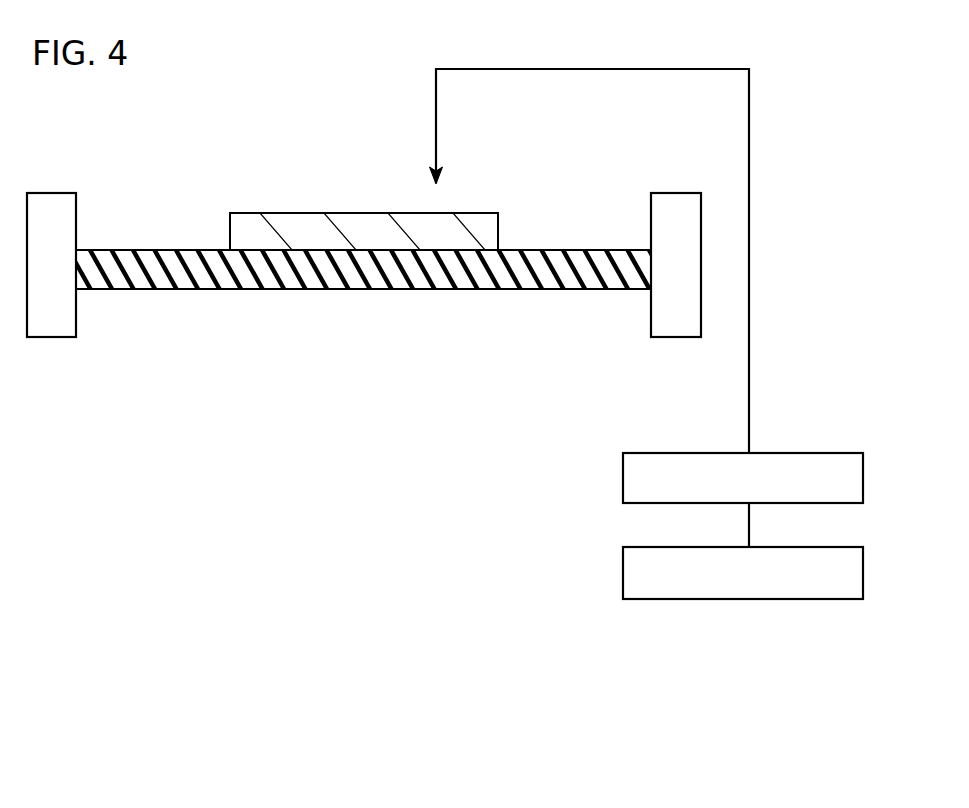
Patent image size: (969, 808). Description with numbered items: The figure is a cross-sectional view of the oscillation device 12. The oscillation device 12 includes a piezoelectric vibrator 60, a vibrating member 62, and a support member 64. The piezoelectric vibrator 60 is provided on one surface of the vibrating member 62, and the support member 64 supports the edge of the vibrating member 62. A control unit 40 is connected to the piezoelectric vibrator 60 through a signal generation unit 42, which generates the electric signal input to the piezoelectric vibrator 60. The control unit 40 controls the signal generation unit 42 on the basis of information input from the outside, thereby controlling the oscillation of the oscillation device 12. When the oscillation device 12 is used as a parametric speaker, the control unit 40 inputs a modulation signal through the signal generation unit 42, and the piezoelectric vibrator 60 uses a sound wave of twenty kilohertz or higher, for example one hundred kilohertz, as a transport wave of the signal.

The oscillation device 12 is at (761, 691).
The control unit 40 is at (623, 563).
The signal generation unit 42 is at (623, 478).
The piezoelectric vibrator 60 is at (278, 223).
The vibrating member 62 is at (175, 272).
The support member 64 is at (47, 213).